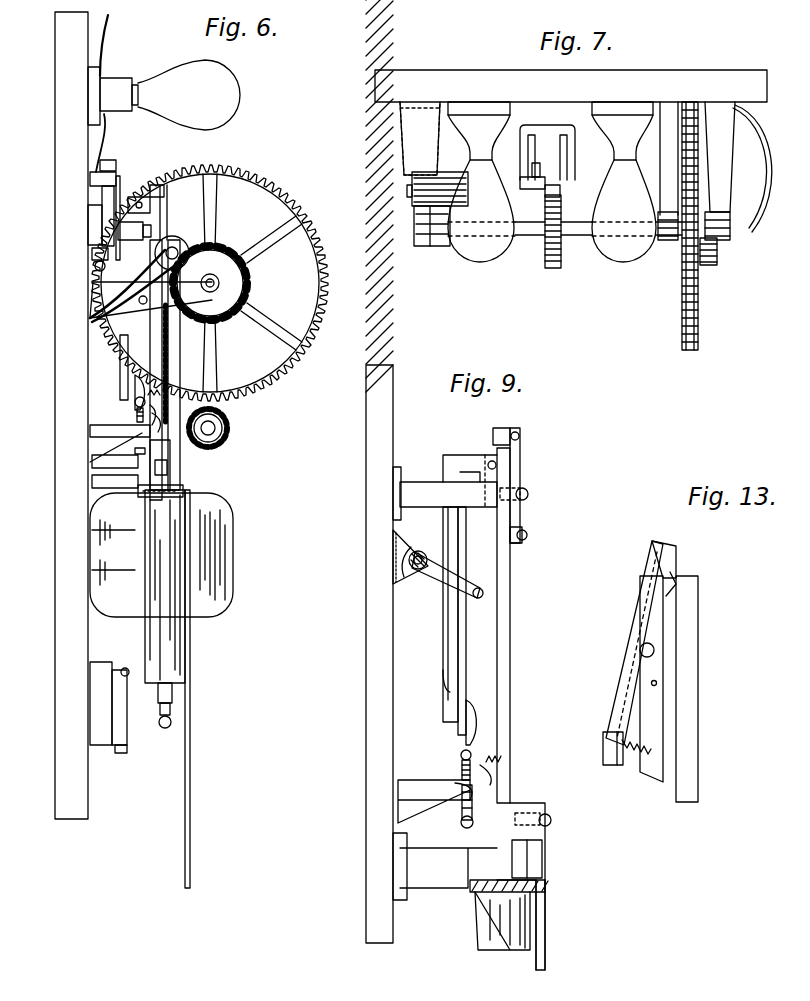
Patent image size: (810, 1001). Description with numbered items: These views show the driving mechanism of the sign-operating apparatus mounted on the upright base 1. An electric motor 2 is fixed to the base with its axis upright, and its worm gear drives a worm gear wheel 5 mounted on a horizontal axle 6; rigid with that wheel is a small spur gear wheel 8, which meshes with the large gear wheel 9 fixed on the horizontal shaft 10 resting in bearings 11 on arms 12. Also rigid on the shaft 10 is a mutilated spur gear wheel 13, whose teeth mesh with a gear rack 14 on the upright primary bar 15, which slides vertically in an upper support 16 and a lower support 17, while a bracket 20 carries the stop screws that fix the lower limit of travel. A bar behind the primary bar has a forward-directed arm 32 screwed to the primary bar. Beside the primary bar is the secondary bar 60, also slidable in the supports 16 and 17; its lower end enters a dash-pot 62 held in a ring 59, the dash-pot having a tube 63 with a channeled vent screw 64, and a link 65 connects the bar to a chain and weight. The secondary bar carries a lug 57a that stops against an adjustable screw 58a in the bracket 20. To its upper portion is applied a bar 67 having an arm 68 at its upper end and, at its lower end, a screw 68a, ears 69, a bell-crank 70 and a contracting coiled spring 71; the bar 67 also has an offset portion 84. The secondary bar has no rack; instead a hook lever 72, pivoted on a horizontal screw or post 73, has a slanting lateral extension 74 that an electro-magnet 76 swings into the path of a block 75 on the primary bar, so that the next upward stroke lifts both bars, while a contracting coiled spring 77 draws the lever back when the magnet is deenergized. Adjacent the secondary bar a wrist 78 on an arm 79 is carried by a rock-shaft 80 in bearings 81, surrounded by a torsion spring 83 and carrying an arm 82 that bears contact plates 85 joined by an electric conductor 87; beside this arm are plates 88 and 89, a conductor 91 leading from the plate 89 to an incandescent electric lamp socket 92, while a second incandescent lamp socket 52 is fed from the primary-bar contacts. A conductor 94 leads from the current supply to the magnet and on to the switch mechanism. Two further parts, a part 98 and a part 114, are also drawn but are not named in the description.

In FIG. 6, the upright base 1 is at (63, 642).
In FIG. 7, the upright base 1 is at (563, 73).
In FIG. 9, the upright base 1 is at (376, 620).
In FIG. 6, the electric motor 2 is at (228, 572).
In FIG. 7, the electric motor 2 is at (748, 214).
In FIG. 6, the worm gear wheel 5 is at (230, 450).
In FIG. 7, the worm gear wheel 5 is at (714, 265).
In FIG. 6, the axle 6 is at (222, 435).
In FIG. 6, the small spur gear wheel 8 is at (215, 428).
In FIG. 6, the large gear wheel 9 is at (326, 300).
In FIG. 7, the large gear wheel 9 is at (694, 350).
In FIG. 6, the horizontal shaft 10 is at (219, 283).
In FIG. 7, the horizontal shaft 10 is at (530, 236).
In FIG. 6, the bearings 11 is at (238, 308).
In FIG. 7, the arms 12 is at (415, 145).
In FIG. 6, the mutilated spur gear wheel 13 is at (236, 294).
In FIG. 7, the mutilated spur gear wheel 13 is at (561, 256).
In FIG. 6, the gear rack 14 is at (162, 365).
In FIG. 7, the gear rack 14 is at (561, 185).
In FIG. 13, the primary bar 15 is at (692, 645).
In FIG. 6, the upper support 16 is at (118, 228).
In FIG. 6, the lower support 17 is at (140, 492).
In FIG. 9, the lower support 17 is at (448, 888).
In FIG. 6, the bracket 20 is at (110, 428).
In FIG. 9, the bracket 20 is at (415, 800).
In FIG. 7, the forward-directed arm 32 is at (568, 150).
In FIG. 7, the incandescent lamp socket 52 is at (625, 112).
In FIG. 6, the lug 57a is at (150, 400).
In FIG. 9, the lug 57a is at (493, 752).
In FIG. 6, the screw 58a is at (135, 445).
In FIG. 9, the screw 58a is at (470, 805).
In FIG. 9, the ring 59 is at (546, 893).
In FIG. 6, the secondary bar 60 is at (165, 358).
In FIG. 9, the secondary bar 60 is at (510, 633).
In FIG. 13, the secondary bar 60 is at (660, 695).
In FIG. 6, the dash-pot 62 is at (170, 540).
In FIG. 9, the dash-pot 62 is at (525, 928).
In FIG. 6, the tube 63 is at (172, 700).
In FIG. 6, the channeled vent screw 64 is at (170, 725).
In FIG. 6, the link 65 is at (191, 698).
In FIG. 9, the link 65 is at (546, 963).
In FIG. 6, the bar 67 is at (120, 340).
In FIG. 9, the bar 67 is at (448, 680).
In FIG. 6, the arm 68 is at (108, 205).
In FIG. 7, the arm 68 is at (525, 150).
In FIG. 9, the arm 68 is at (465, 460).
In FIG. 6, the screw 68a is at (137, 410).
In FIG. 9, the screw 68a is at (462, 758).
In FIG. 6, the ears 69 is at (137, 398).
In FIG. 9, the ears 69 is at (460, 745).
In FIG. 6, the bell-crank 70 is at (135, 380).
In FIG. 9, the bell-crank 70 is at (470, 722).
In FIG. 6, the contracting coiled spring 71 is at (162, 424).
In FIG. 9, the contracting coiled spring 71 is at (500, 762).
In FIG. 7, the hook lever 72 is at (535, 190).
In FIG. 9, the hook lever 72 is at (521, 460).
In FIG. 13, the hook lever 72 is at (645, 612).
In FIG. 9, the horizontal screw or post 73 is at (529, 494).
In FIG. 13, the horizontal screw or post 73 is at (640, 650).
In FIG. 7, the slanting lateral extension 74 is at (537, 166).
In FIG. 9, the slanting lateral extension 74 is at (500, 431).
In FIG. 13, the slanting lateral extension 74 is at (676, 555).
In FIG. 13, the block 75 is at (680, 576).
In FIG. 6, the electro-magnet 76 is at (172, 240).
In FIG. 7, the electro-magnet 76 is at (420, 186).
In FIG. 9, the contracting coiled spring 77 is at (528, 535).
In FIG. 13, the contracting coiled spring 77 is at (650, 752).
In FIG. 9, the wrist 78 is at (485, 597).
In FIG. 9, the arm 79 is at (478, 586).
In FIG. 9, the rock-shaft 80 is at (421, 569).
In FIG. 9, the bearings 81 is at (415, 552).
In FIG. 6, the arm 82 is at (128, 205).
In FIG. 9, the torsion spring 83 is at (407, 585).
In FIG. 9, the offset portion 84 is at (458, 643).
In FIG. 6, the contact plates 85 is at (118, 180).
In FIG. 6, the electric conductor 87 is at (121, 195).
In FIG. 6, the plate 88 is at (92, 258).
In FIG. 6, the plate 89 is at (110, 163).
In FIG. 6, the conductor 91 is at (104, 140).
In FIG. 6, the incandescent electric lamp socket 92 is at (112, 82).
In FIG. 7, the incandescent electric lamp socket 92 is at (490, 108).
In FIG. 6, the conductor 94 is at (93, 300).
In FIG. 6, the band 98 is at (90, 318).
In FIG. 6, the cable 114 is at (106, 38).